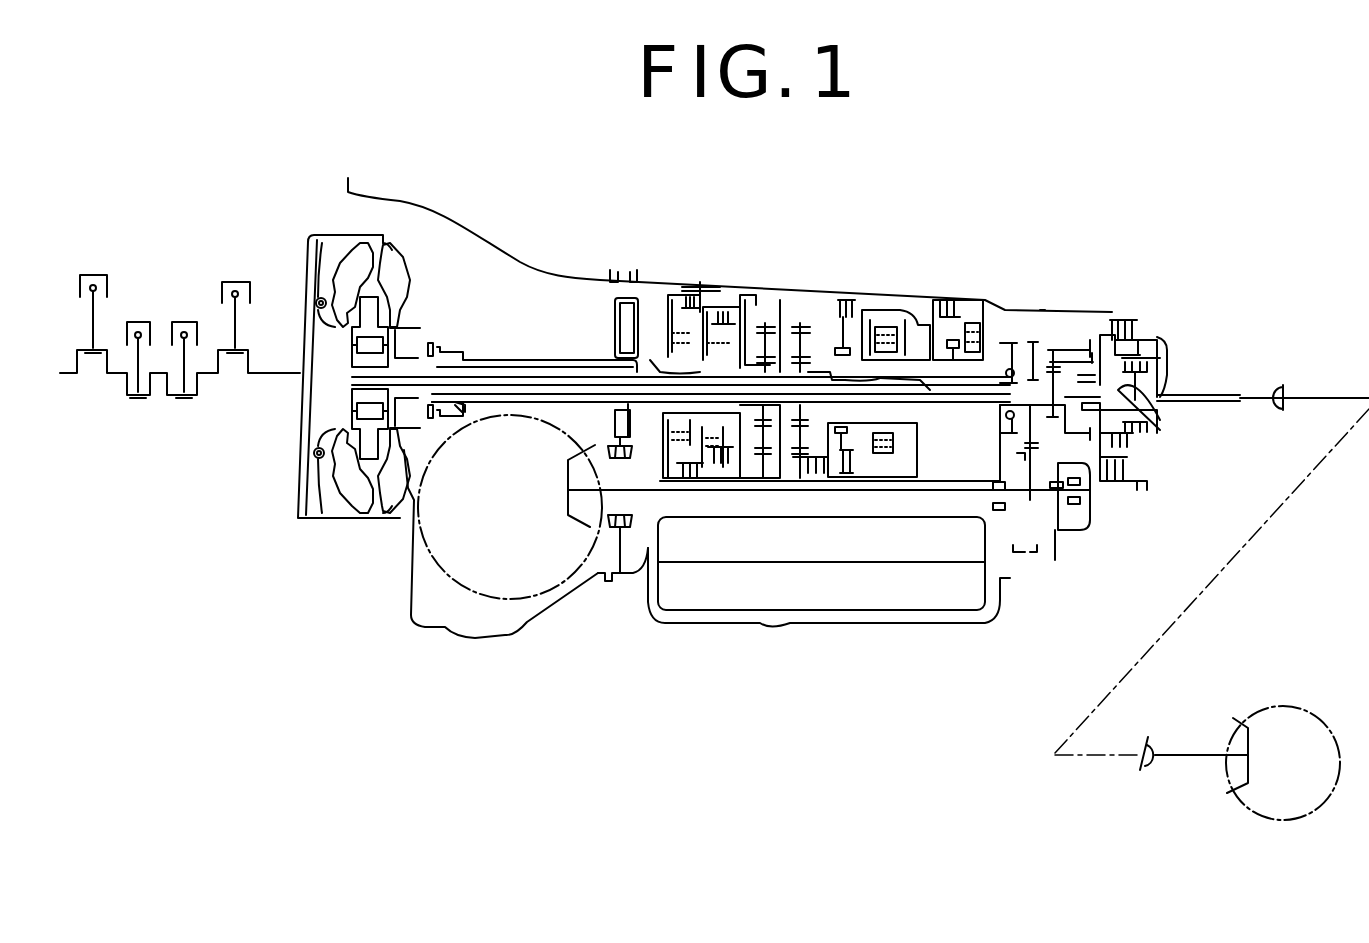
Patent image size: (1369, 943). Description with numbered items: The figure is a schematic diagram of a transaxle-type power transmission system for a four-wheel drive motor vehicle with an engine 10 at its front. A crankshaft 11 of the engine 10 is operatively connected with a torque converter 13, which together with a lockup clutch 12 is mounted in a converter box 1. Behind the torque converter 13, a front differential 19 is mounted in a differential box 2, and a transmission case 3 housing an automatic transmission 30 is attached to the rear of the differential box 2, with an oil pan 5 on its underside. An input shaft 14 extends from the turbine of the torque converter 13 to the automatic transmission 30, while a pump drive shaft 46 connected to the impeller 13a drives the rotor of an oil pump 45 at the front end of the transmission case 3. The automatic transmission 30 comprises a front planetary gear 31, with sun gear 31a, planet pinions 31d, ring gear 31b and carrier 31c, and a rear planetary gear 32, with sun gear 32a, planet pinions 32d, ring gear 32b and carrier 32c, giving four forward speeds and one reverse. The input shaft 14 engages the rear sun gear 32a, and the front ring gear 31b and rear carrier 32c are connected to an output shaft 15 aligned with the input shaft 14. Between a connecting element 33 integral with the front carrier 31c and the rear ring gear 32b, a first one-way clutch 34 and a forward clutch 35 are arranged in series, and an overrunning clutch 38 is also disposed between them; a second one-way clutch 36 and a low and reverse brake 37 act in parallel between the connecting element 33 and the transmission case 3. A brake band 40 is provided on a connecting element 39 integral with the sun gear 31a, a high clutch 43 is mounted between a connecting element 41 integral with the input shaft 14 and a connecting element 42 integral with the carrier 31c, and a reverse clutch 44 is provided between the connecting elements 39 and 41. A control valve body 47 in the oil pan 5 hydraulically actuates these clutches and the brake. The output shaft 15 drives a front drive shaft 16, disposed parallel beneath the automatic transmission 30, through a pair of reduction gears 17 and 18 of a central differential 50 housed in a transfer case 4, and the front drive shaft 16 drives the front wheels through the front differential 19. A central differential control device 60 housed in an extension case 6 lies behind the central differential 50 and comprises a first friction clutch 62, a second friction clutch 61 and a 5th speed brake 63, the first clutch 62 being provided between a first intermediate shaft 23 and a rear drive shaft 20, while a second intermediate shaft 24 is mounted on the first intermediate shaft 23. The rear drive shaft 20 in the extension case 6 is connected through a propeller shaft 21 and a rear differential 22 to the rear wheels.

The converter box 1 is at (458, 226).
The differential box 2 is at (528, 625).
The transmission case 3 is at (622, 297).
The transfer case 4 is at (1038, 309).
The oil pan 5 is at (885, 624).
The extension case 6 is at (1150, 330).
The engine 10 is at (189, 296).
The crankshaft 11 is at (263, 376).
The lockup clutch 12 is at (316, 277).
The torque converter 13 is at (398, 262).
The impeller 13a is at (397, 320).
The input shaft 14 is at (453, 377).
The output shaft 15 is at (1005, 388).
The front drive shaft 16 is at (870, 522).
The reduction gear 17 is at (1032, 340).
The reduction gear 18 is at (1040, 572).
The front differential 19 is at (564, 593).
The rear drive shaft 20 is at (1223, 395).
The propeller shaft 21 is at (1075, 756).
The rear differential 22 is at (1312, 707).
The first intermediate shaft 23 is at (1110, 400).
The second intermediate shaft 24 is at (1133, 392).
The automatic transmission 30 is at (918, 237).
The front planetary gear 31 is at (768, 470).
The sun gear 31a is at (773, 408).
The ring gear 31b is at (793, 297).
The carrier 31c is at (790, 408).
The planet pinions 31d is at (588, 300).
The rear planetary gear 32 is at (861, 413).
The sun gear 32a is at (825, 488).
The ring gear 32b is at (807, 298).
The carrier 32c is at (905, 386).
The planet pinions 32d is at (818, 386).
The connecting element 33 is at (777, 298).
The first one-way clutch 34 is at (847, 300).
The forward clutch 35 is at (803, 300).
The second one-way clutch 36 is at (979, 361).
The low and reverse brake 37 is at (950, 300).
The overrunning clutch 38 is at (867, 298).
The connecting element 39 is at (745, 285).
The brake band 40 is at (697, 282).
The connecting element 41 is at (657, 423).
The connecting element 42 is at (680, 370).
The high clutch 43 is at (742, 297).
The reverse clutch 44 is at (717, 272).
The oil pump 45 is at (618, 334).
The pump drive shaft 46 is at (507, 360).
The control valve body 47 is at (802, 602).
The central differential 50 is at (1080, 323).
The central differential control device 60 is at (1160, 318).
The second fluid operated multiple-disk friction clutch 61 is at (1138, 342).
The first fluid operated multiple-disk friction clutch 62 is at (1160, 360).
The 5th speed brake 63 is at (1125, 320).